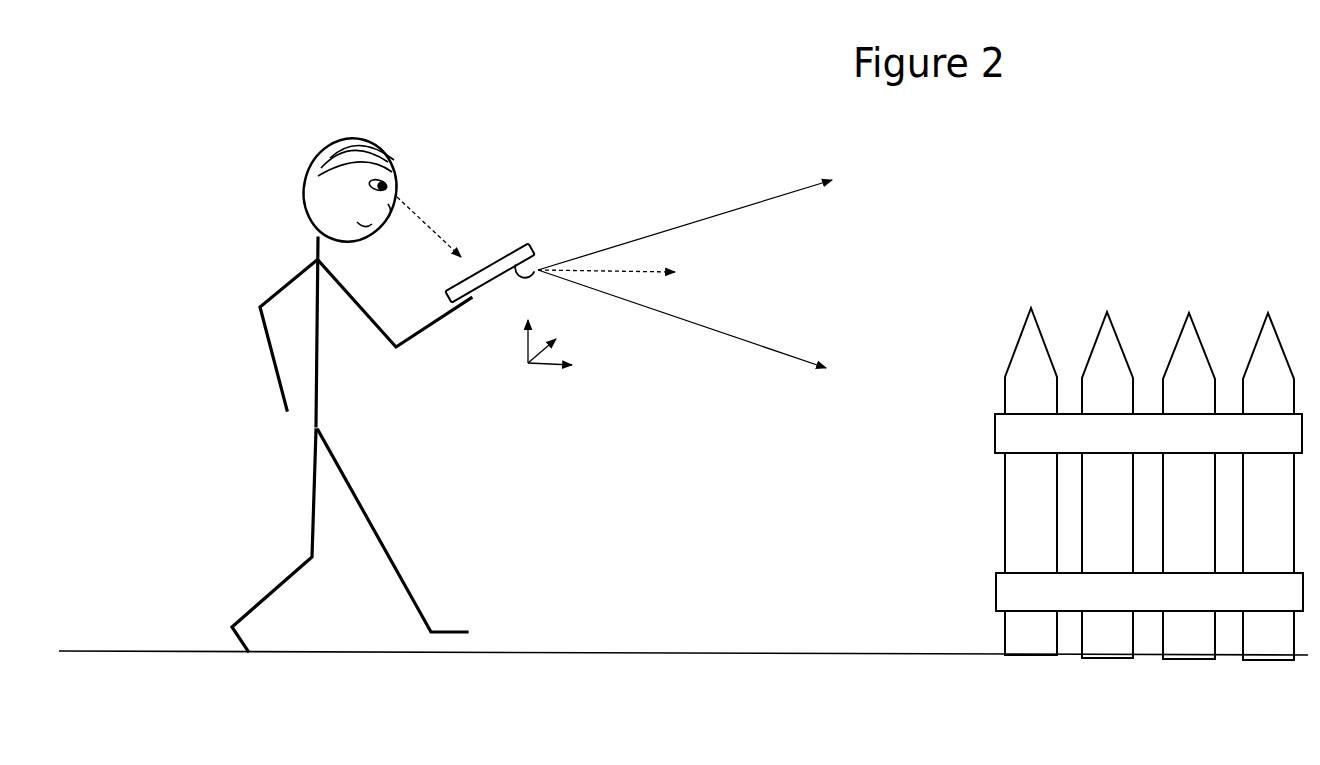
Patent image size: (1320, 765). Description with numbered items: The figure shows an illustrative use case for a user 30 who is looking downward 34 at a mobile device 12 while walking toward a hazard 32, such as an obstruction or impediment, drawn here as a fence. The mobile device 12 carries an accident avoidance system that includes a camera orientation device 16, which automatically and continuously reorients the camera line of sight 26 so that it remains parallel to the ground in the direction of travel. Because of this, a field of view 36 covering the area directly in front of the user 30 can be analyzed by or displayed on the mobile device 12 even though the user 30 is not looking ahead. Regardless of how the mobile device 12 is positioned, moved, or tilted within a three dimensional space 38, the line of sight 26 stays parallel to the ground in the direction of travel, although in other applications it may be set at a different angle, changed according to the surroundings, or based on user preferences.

The mobile device 12 is at (484, 296).
The camera orientation device 16 is at (540, 263).
The camera line of sight 26 is at (661, 270).
The user 30 is at (225, 269).
The hazard 32 is at (1166, 294).
The looking downward 34 is at (432, 220).
The field of view 36 is at (775, 302).
The three dimensional space 38 is at (540, 368).